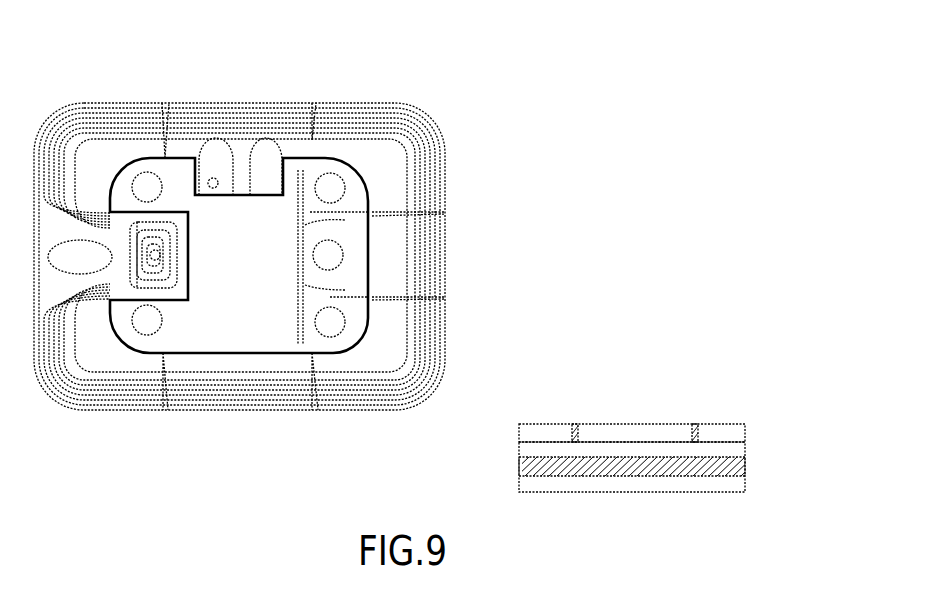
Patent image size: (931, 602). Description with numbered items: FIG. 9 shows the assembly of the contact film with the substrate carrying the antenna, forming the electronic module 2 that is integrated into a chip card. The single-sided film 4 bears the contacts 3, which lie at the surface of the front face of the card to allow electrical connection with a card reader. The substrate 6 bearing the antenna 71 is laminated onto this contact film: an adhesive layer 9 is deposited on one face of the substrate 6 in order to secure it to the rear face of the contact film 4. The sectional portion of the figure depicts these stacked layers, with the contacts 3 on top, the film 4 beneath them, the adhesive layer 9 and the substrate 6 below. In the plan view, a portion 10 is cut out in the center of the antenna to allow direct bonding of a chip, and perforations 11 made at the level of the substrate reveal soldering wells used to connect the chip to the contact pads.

The electronic module 2 is at (472, 240).
The contacts 3 is at (393, 187).
The single-sided film 4 is at (438, 301).
The substrate 6 is at (717, 485).
The adhesive layer 9 is at (742, 468).
The portion cut out in the center of the antenna 10 is at (249, 262).
The perforations 11 is at (338, 183).
The antenna 71 is at (436, 378).